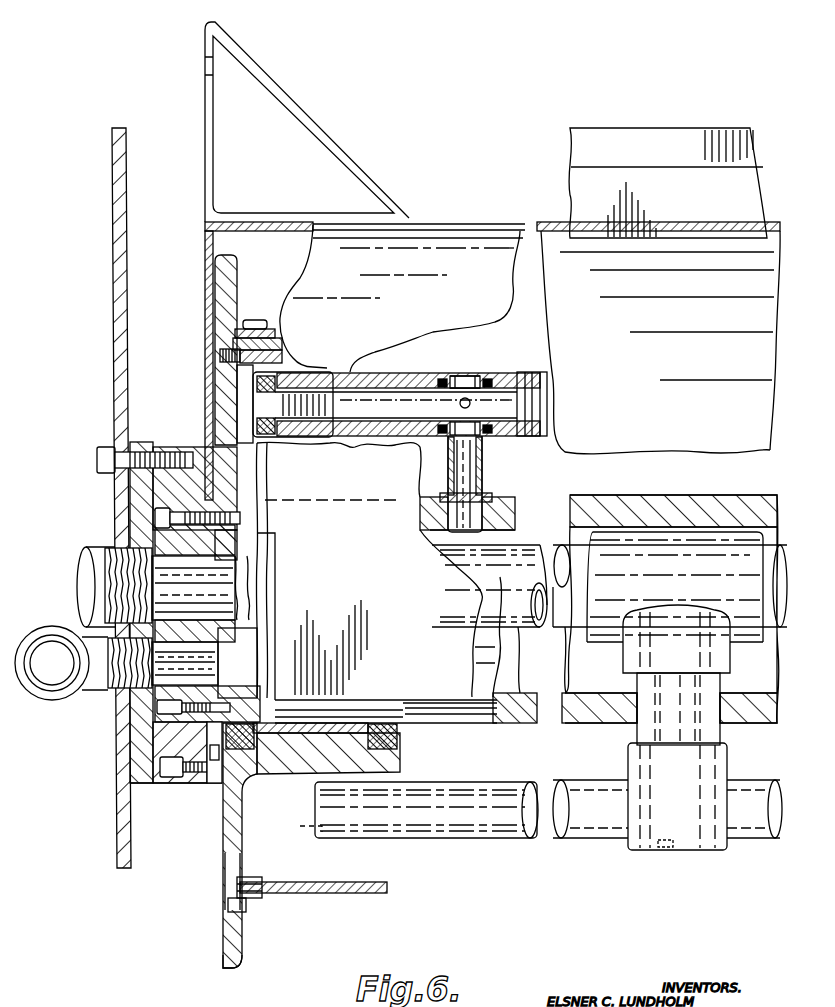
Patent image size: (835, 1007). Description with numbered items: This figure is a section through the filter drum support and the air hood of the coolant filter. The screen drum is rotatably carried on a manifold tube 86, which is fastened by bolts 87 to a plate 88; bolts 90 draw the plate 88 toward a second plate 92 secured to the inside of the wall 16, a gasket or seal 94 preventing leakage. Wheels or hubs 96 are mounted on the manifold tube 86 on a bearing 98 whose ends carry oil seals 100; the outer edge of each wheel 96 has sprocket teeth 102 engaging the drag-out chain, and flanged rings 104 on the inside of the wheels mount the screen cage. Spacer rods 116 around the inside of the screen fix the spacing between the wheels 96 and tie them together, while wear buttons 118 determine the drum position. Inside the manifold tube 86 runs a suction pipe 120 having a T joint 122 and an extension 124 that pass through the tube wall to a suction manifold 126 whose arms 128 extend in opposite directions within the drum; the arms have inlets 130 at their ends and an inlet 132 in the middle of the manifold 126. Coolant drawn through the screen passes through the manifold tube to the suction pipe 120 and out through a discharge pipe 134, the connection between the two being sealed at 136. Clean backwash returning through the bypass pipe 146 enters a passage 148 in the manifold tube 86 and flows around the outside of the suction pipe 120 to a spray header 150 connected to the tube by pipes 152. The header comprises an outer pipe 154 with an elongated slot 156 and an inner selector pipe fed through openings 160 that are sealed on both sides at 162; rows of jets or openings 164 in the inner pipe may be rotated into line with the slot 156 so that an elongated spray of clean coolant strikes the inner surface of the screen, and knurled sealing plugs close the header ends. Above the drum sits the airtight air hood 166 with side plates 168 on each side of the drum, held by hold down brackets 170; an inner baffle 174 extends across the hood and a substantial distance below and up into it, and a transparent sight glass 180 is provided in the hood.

The wall 16 is at (117, 812).
The hold down brackets 170 is at (282, 82).
The side plates 168 is at (205, 266).
The air hood 166 is at (528, 199).
The transparent sight glass 180 is at (674, 98).
The seal 136 is at (190, 507).
The spacer rods 116 is at (283, 352).
The jets or openings 164 is at (373, 375).
The spray header 150 is at (450, 384).
The elongated slot 156 is at (390, 372).
The openings 160 is at (483, 347).
The seals 162 is at (443, 436).
The outer pipe 154 is at (570, 425).
The pipes 152 is at (483, 487).
The inner baffle 174 is at (453, 690).
The suction pipe 120 is at (525, 558).
The manifold tube 86 is at (521, 718).
The T joint 122 is at (685, 545).
The extension 124 is at (653, 723).
The suction manifold 126 is at (717, 770).
The arms 128 is at (466, 825).
The inlet 132 is at (673, 847).
The bearing 98 is at (395, 760).
The oil seals 100 is at (398, 742).
The wheels or hubs 96 is at (225, 933).
The sprocket teeth 102 is at (231, 966).
The flanged rings 104 is at (290, 872).
The inlets 130 is at (300, 826).
The second plate 92 is at (137, 738).
The gasket or seal 94 is at (167, 780).
The plate 88 is at (172, 777).
The wear buttons 118 is at (218, 777).
The discharge pipe 134 is at (87, 598).
The bypass pipe 146 is at (47, 677).
The passage 148 is at (203, 663).
The bolts 90 is at (97, 460).
The bolts 87 is at (155, 519).